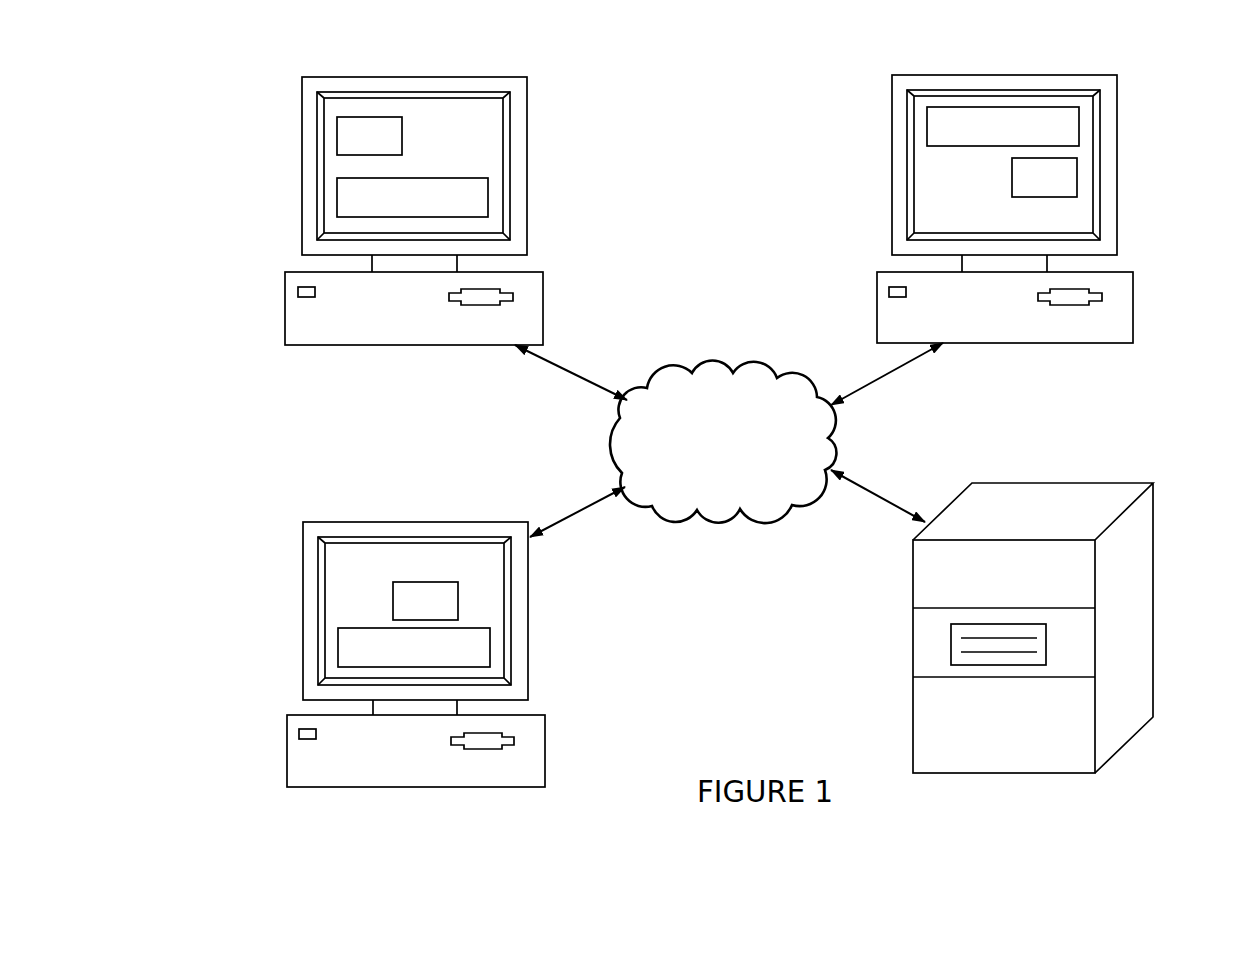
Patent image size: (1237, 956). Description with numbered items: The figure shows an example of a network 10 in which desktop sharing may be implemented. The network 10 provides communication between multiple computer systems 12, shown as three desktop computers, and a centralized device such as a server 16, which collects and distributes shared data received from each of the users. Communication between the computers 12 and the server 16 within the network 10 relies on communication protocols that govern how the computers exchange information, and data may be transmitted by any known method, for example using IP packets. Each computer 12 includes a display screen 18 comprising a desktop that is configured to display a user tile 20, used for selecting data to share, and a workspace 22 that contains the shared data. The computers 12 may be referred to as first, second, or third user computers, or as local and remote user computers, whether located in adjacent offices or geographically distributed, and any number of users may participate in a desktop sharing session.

The network 10 is at (835, 451).
The computer system 12 is at (543, 289).
The server 16 is at (913, 568).
The display screen 18 is at (308, 150).
The user tile 20 is at (367, 116).
The workspace 22 is at (488, 190).